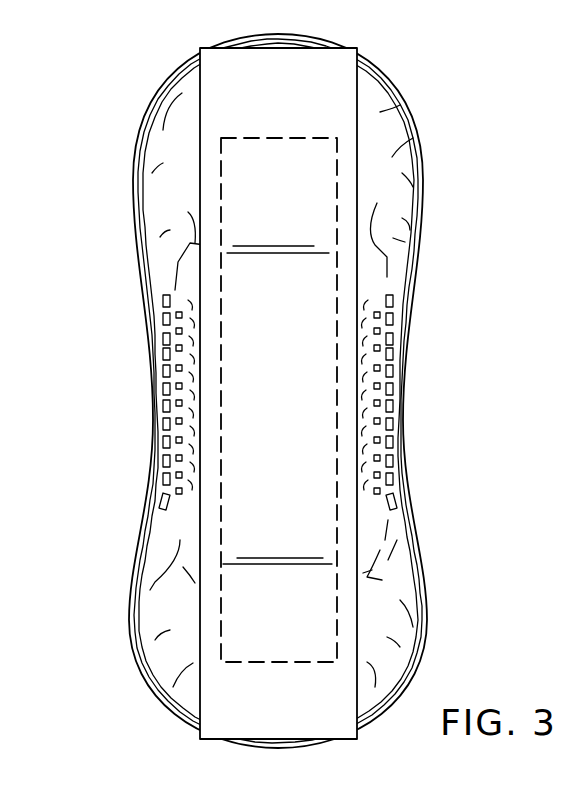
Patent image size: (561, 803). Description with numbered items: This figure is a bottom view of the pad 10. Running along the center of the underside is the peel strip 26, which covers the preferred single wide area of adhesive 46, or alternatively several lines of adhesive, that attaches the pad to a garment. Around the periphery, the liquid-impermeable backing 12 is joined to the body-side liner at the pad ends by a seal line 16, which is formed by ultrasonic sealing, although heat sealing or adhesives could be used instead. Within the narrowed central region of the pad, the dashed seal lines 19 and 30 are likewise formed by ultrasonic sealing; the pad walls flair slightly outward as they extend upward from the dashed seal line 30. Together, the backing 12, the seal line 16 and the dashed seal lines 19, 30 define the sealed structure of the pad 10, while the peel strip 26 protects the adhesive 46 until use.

The pad 10 is at (82, 162).
The liquid-impermeable backing 12 is at (392, 151).
The seal line 16 is at (412, 208).
The dashed seal line 19 is at (398, 456).
The peel strip 26 is at (345, 103).
The dashed seal line 30 is at (398, 379).
The adhesive 46 is at (281, 153).